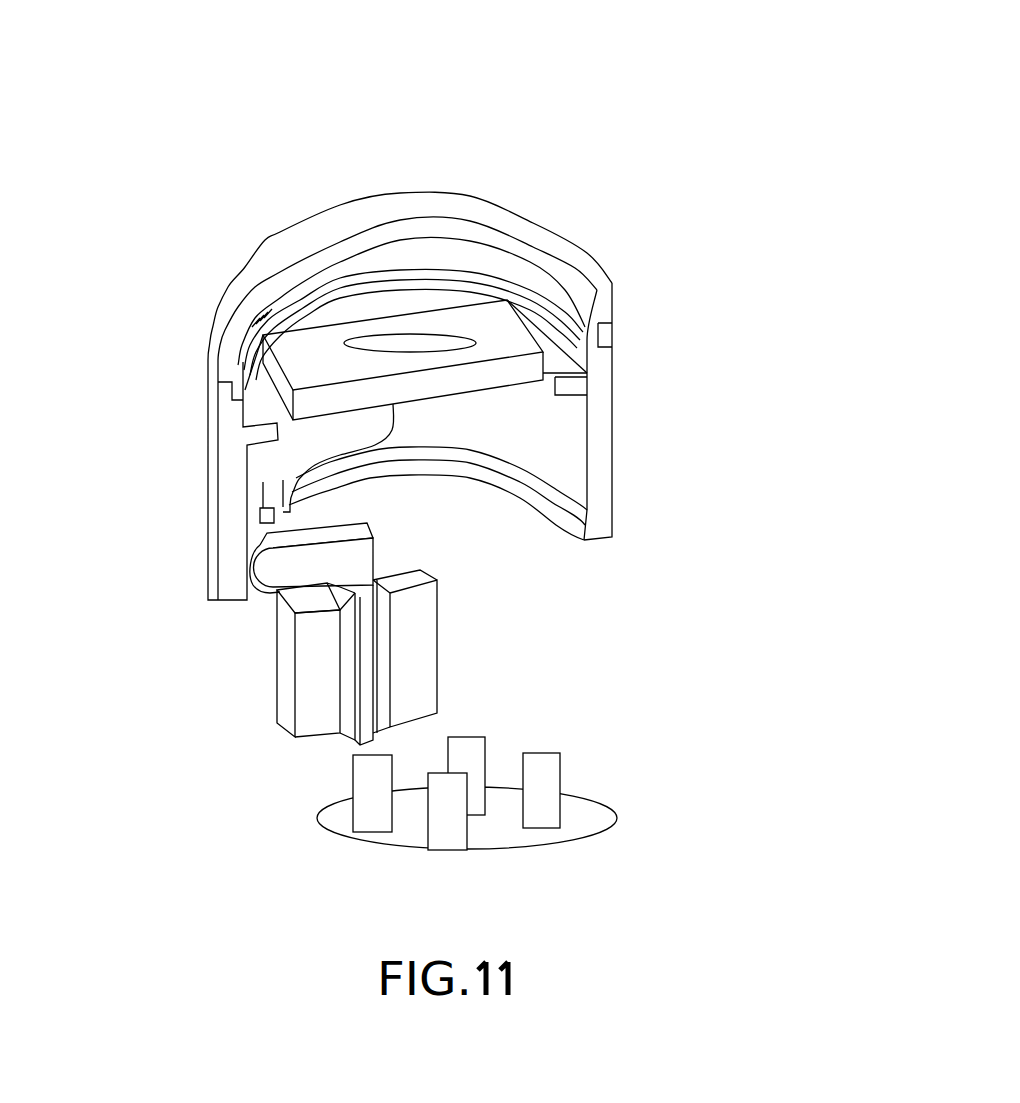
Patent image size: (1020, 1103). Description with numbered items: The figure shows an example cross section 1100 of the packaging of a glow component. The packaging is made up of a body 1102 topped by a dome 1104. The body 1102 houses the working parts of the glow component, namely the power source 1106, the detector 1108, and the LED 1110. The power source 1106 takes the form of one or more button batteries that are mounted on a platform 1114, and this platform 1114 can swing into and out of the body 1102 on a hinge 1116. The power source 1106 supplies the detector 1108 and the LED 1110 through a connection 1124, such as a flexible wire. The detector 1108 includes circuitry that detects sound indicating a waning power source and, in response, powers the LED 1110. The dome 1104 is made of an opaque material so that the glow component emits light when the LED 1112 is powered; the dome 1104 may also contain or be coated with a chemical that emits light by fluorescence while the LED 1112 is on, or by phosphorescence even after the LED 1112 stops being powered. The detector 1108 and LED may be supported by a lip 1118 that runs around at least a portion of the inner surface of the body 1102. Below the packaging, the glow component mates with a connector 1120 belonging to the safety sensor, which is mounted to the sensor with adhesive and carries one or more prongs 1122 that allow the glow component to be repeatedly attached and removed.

The cross section 1100 is at (223, 221).
The body 1102 is at (620, 457).
The dome 1104 is at (580, 230).
The power source 1106 is at (282, 720).
The detector 1108 is at (508, 373).
The LED 1110 is at (488, 343).
The LED 1112 is at (318, 682).
The platform 1114 is at (374, 551).
The hinge 1116 is at (262, 514).
The lip 1118 is at (240, 416).
The connector 1120 is at (620, 816).
The prongs 1122 is at (562, 752).
The connection 1124 is at (348, 451).